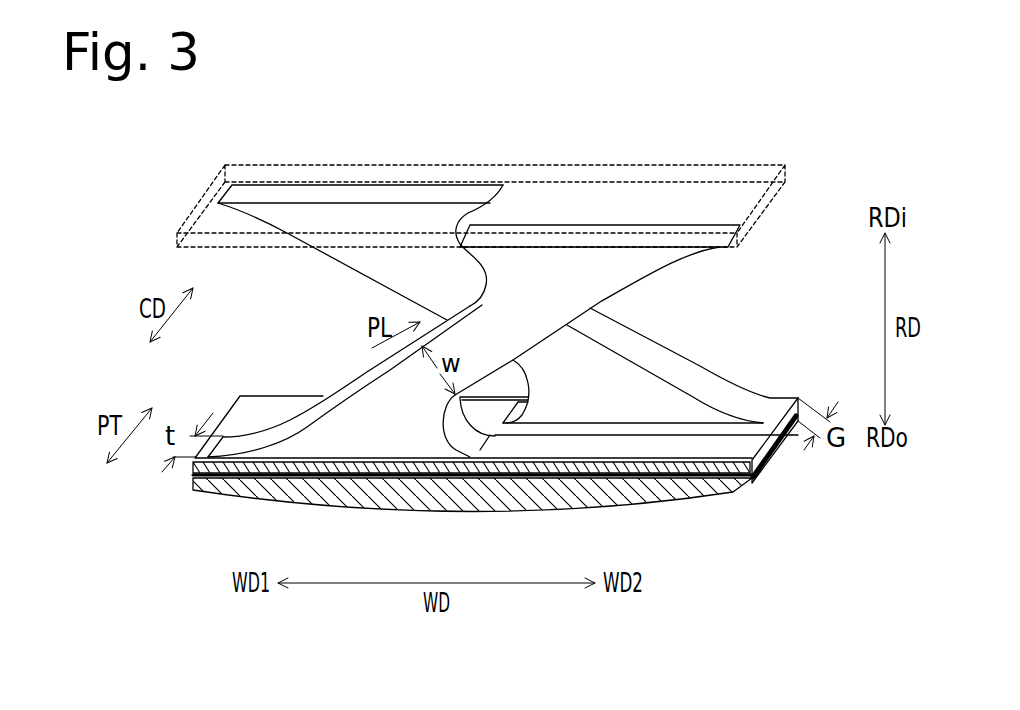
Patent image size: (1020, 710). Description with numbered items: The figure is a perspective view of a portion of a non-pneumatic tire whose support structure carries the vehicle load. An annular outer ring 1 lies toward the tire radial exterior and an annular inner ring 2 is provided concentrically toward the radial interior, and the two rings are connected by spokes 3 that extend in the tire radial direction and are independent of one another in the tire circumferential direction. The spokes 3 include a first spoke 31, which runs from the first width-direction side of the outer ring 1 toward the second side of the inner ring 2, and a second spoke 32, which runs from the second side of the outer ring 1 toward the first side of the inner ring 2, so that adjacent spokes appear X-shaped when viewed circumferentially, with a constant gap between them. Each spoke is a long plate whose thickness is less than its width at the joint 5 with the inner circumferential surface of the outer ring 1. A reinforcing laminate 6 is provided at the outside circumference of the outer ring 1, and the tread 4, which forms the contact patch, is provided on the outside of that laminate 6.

The outer ring 1 is at (750, 457).
The inner ring 2 is at (763, 208).
The spokes 3 is at (503, 321).
The first spoke 31 is at (352, 352).
The second spoke 32 is at (358, 275).
The tread 4 is at (717, 500).
The joint 5 is at (333, 455).
The laminate 6 is at (727, 447).